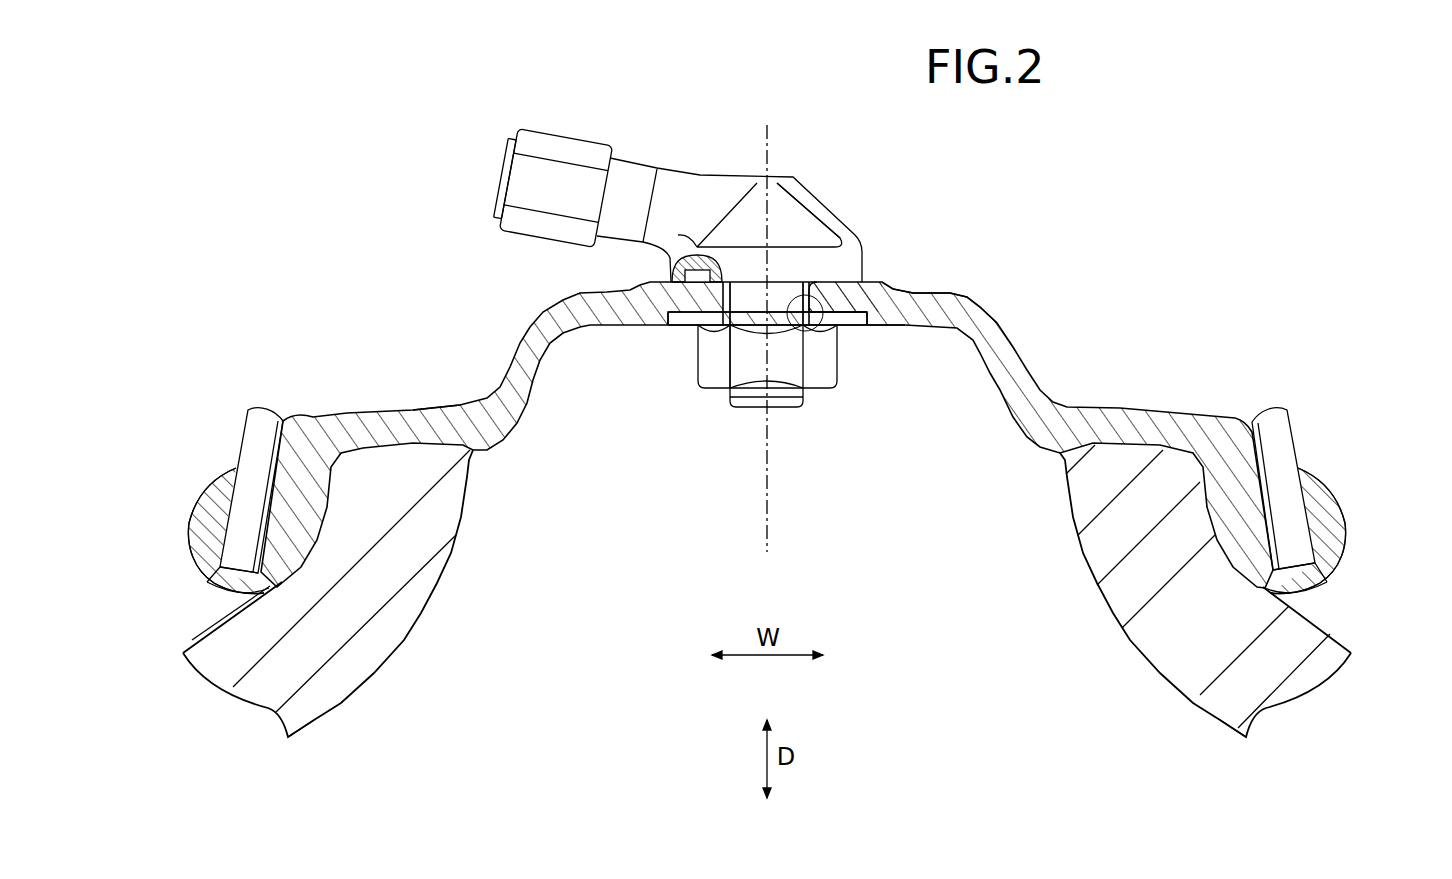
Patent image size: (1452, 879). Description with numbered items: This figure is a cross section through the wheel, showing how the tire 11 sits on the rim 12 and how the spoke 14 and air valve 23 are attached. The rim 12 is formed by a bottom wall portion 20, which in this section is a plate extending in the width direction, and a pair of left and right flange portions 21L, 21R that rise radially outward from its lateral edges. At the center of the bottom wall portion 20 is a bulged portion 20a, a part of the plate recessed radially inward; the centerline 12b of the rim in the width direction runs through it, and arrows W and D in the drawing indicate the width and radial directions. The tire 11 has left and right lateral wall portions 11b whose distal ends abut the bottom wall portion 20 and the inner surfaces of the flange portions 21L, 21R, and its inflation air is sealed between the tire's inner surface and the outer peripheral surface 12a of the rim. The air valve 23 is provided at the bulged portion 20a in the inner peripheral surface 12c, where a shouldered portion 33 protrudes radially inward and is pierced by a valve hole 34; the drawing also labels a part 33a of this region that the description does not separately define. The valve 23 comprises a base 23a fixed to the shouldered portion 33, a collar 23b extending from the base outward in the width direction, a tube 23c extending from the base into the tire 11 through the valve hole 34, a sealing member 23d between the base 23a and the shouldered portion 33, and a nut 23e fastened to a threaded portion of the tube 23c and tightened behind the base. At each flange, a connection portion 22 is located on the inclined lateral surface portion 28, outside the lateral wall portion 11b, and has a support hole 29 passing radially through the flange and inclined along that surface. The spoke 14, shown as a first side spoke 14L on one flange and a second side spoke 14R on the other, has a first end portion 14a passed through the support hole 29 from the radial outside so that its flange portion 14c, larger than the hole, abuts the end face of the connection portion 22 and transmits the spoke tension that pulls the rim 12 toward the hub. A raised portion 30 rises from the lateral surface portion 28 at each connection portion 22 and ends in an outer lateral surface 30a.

The tire 11 is at (767, 629).
The lateral wall portions 11b is at (296, 697).
The rim 12 is at (512, 357).
The outer peripheral surface 12a is at (968, 295).
The centerline 12b is at (770, 515).
The inner peripheral surface 12c is at (913, 292).
The spoke 14 is at (764, 505).
The first side spoke 14L is at (253, 457).
The second side spoke 14R is at (1281, 457).
The first end portion 14a is at (237, 542).
The flange portion 14c is at (220, 567).
The bottom wall portion 20 is at (423, 406).
The bulged portion 20a is at (933, 302).
The first flange portion 21L is at (287, 553).
The second flange portion 21R is at (1247, 553).
The connection portion 22 is at (197, 510).
The air valve 23 is at (790, 175).
The base 23a is at (803, 263).
The collar 23b is at (628, 173).
The tube 23c is at (753, 302).
The sealing member 23d is at (693, 263).
The nut 23e is at (698, 372).
The lateral surface portion 28 is at (190, 532).
The support hole 29 is at (207, 583).
The raised portion 30 is at (199, 505).
The outer lateral surface 30a is at (190, 525).
The shouldered portion 33 is at (832, 278).
The washer surface 33a is at (820, 302).
The valve hole 34 is at (819, 328).